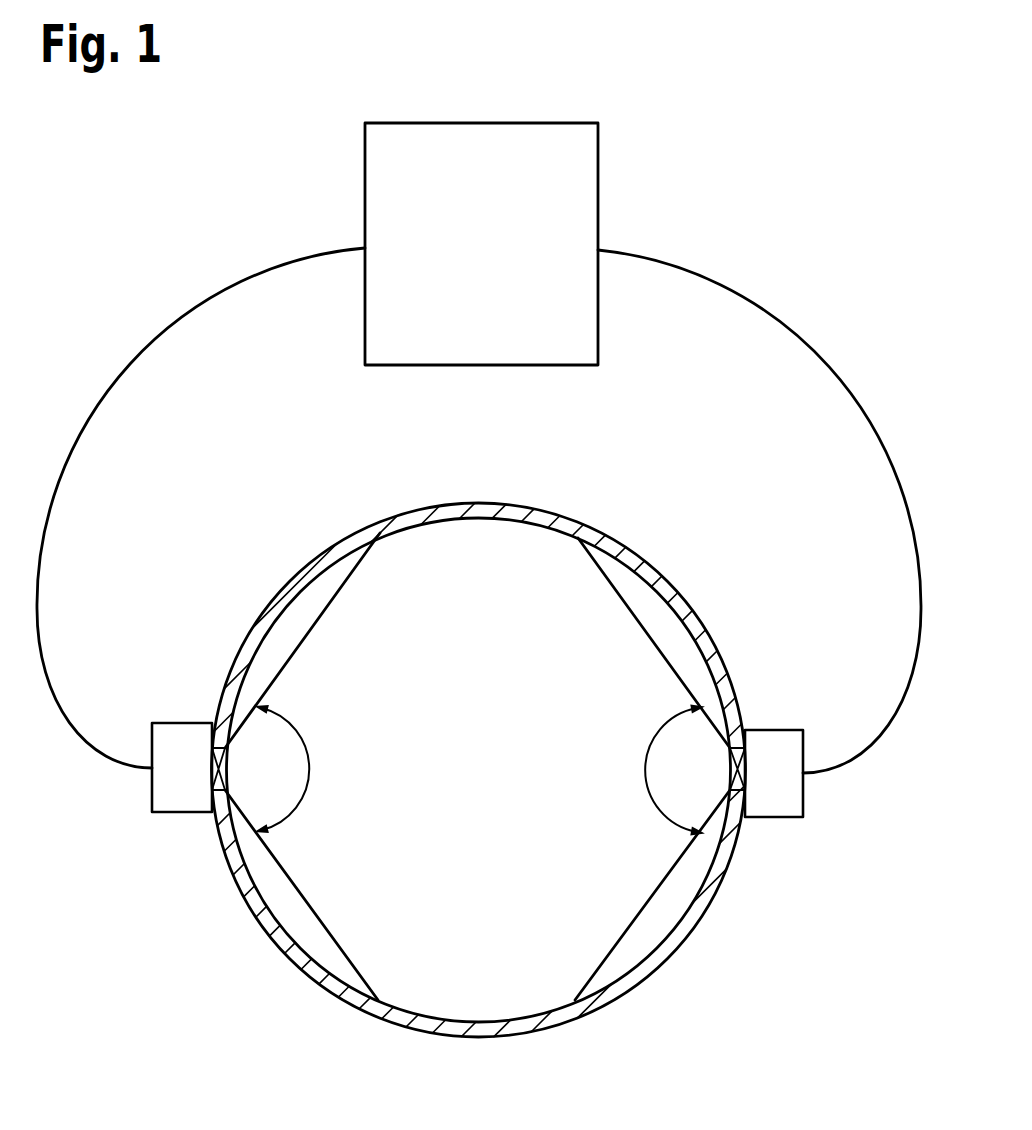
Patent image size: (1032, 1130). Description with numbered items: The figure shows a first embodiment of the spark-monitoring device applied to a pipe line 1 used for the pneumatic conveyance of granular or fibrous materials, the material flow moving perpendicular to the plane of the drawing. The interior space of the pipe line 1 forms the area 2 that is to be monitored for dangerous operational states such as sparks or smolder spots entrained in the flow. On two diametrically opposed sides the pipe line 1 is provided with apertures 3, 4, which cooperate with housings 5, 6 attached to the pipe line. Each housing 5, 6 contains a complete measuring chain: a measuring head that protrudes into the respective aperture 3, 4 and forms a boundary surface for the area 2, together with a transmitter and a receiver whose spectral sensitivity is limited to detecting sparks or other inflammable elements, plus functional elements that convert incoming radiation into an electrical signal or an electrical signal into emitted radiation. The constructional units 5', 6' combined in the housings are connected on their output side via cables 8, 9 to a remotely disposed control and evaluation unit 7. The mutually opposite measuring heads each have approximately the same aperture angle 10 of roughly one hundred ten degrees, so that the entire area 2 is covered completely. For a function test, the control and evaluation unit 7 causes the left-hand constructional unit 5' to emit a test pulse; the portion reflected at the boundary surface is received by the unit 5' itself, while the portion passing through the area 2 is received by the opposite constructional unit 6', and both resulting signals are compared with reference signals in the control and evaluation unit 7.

The pipe line 1 is at (498, 503).
The area 2 is at (563, 595).
The aperture 3 is at (208, 792).
The aperture 4 is at (746, 792).
The housing 5 is at (178, 699).
The constructional unit 5' is at (183, 768).
The housing 6 is at (774, 702).
The constructional unit 6' is at (775, 771).
The control and evaluation unit 7 is at (573, 153).
The cable 8 is at (186, 320).
The cable 9 is at (762, 314).
The aperture angle 10 is at (310, 742).